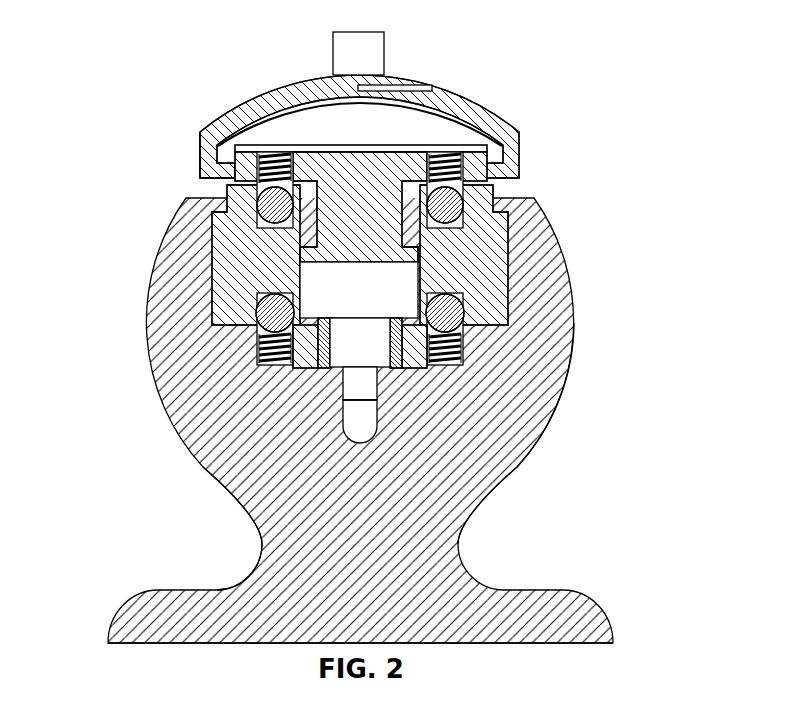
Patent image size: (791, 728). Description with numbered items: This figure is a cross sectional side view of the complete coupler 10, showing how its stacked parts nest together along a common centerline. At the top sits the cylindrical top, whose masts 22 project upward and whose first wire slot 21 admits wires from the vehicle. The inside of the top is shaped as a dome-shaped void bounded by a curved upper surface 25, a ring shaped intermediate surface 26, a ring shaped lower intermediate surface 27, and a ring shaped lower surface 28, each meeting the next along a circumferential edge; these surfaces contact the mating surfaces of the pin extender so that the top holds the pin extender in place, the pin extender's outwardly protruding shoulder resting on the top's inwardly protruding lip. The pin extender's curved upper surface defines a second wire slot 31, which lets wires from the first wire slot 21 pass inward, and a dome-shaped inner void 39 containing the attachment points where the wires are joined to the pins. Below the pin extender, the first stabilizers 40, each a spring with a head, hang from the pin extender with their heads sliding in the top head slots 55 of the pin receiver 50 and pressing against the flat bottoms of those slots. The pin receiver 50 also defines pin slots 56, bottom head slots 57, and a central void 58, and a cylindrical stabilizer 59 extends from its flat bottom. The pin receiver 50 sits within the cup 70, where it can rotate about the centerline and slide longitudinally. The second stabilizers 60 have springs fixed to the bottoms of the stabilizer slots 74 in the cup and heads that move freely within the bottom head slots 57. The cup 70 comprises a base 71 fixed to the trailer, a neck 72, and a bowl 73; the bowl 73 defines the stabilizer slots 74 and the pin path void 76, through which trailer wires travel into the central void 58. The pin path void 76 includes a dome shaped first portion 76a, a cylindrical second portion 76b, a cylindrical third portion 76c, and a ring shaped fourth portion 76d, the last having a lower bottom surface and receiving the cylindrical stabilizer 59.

The coupler 10 is at (148, 79).
The first wire slot 21 is at (447, 122).
The masts 22 is at (358, 32).
The curved upper surface 25 is at (370, 91).
The ring shaped intermediate surface 26 is at (210, 144).
The ring shaped lower intermediate surface 27 is at (497, 138).
The ring shaped lower surface 28 is at (483, 180).
The second wire slot 31 is at (447, 146).
The dome-shaped inner void 39 is at (317, 120).
The first stabilizers 40 is at (272, 152).
The pin receiver 50 is at (512, 300).
The top head slots 55 is at (447, 228).
The pin slots 56 is at (302, 264).
The bottom head slots 57 is at (266, 315).
The central void 58 is at (420, 290).
The cylindrical stabilizer 59 is at (318, 364).
The second stabilizers 60 is at (282, 326).
The cup 70 is at (568, 542).
The base 71 is at (612, 619).
The neck 72 is at (257, 532).
The bowl 73 is at (506, 489).
The stabilizer slots 74 is at (205, 197).
The pin path void 76 is at (345, 406).
The dome shaped first portion 76a is at (362, 425).
The cylindrical second portion 76b is at (362, 383).
The cylindrical third portion 76c is at (362, 350).
The ring shaped fourth portion 76d is at (334, 412).